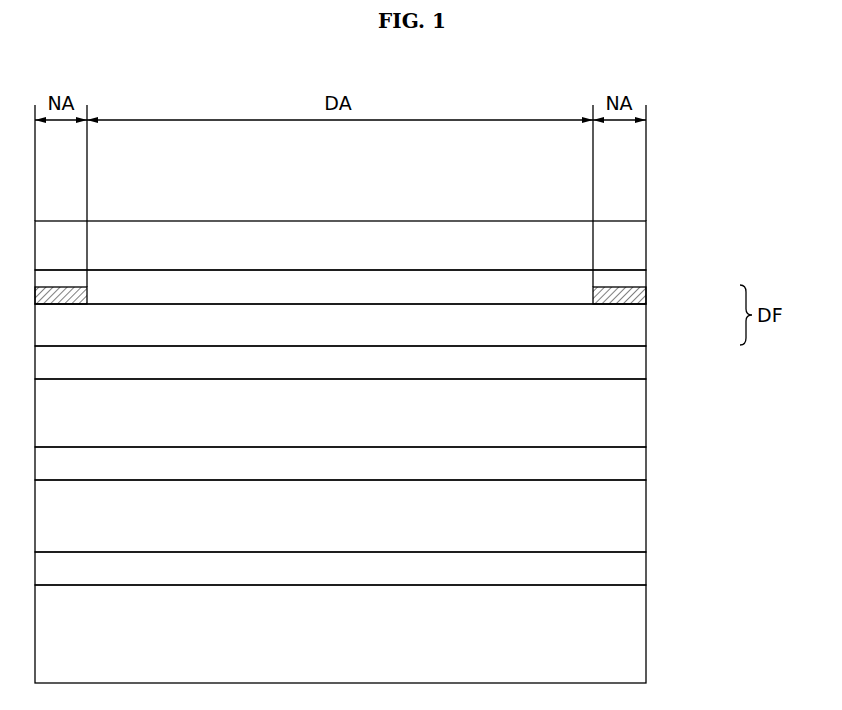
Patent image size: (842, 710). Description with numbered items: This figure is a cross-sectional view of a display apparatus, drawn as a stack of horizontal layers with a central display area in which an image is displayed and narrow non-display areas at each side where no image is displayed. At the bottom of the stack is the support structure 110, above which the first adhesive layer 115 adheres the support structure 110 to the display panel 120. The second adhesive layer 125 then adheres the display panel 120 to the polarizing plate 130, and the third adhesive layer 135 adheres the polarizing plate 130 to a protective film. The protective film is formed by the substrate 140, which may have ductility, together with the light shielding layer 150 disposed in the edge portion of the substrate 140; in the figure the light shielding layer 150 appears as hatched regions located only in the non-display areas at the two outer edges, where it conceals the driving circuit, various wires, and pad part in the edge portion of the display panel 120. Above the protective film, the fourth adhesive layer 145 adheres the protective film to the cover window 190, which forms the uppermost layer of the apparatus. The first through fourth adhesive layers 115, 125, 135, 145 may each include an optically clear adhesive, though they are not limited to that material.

The support structure 110 is at (632, 628).
The first adhesive layer 115 is at (632, 569).
The display panel 120 is at (632, 516).
The second adhesive layer 125 is at (632, 467).
The polarizing plate 130 is at (632, 414).
The third adhesive layer 135 is at (632, 362).
The substrate 140 is at (632, 326).
The fourth adhesive layer 145 is at (632, 278).
The light shielding layer 150 is at (632, 297).
The cover window 190 is at (632, 237).